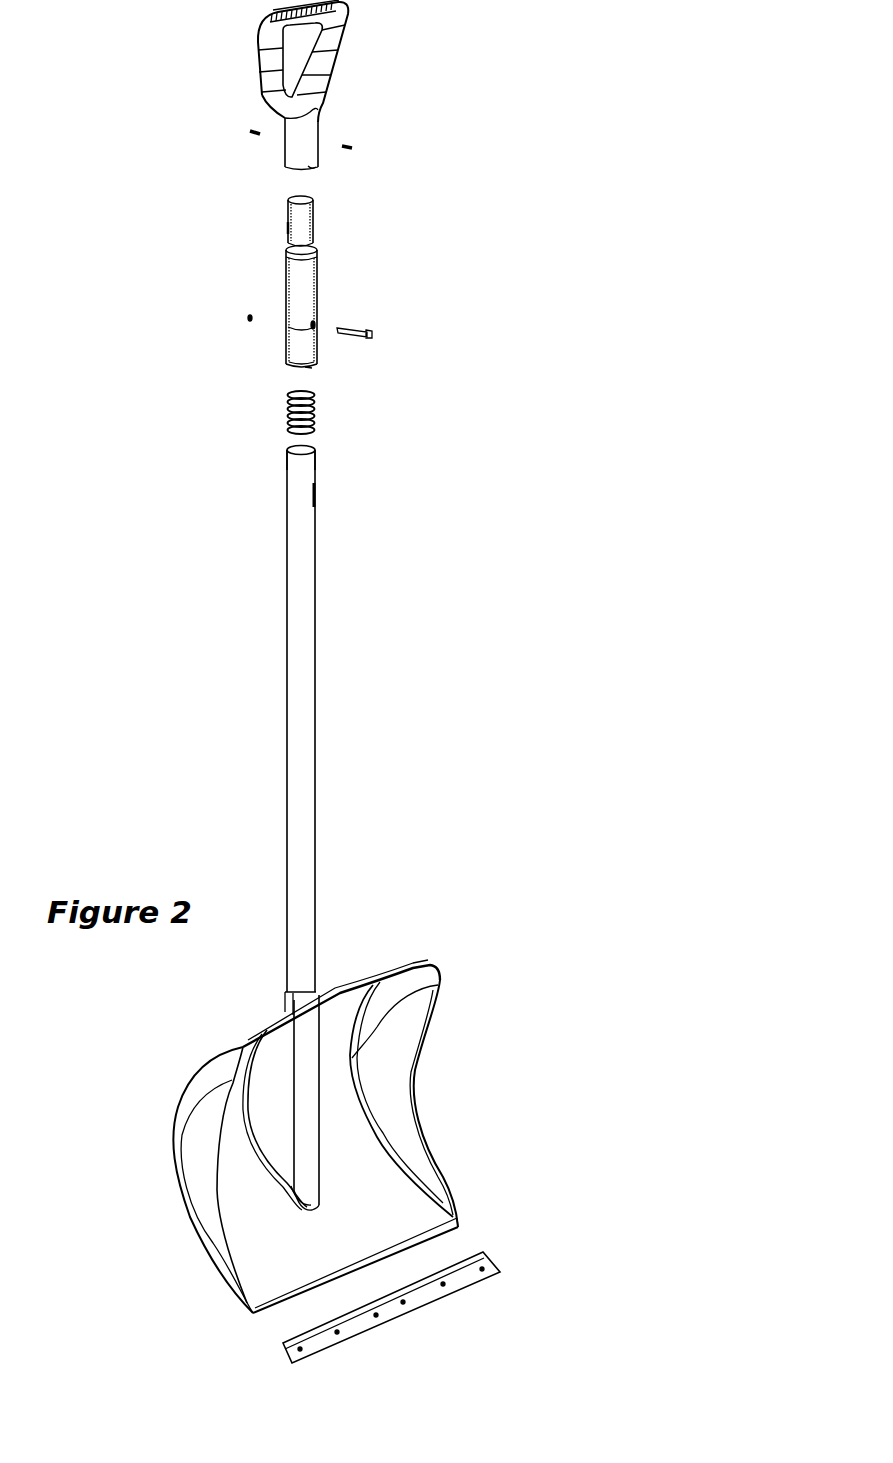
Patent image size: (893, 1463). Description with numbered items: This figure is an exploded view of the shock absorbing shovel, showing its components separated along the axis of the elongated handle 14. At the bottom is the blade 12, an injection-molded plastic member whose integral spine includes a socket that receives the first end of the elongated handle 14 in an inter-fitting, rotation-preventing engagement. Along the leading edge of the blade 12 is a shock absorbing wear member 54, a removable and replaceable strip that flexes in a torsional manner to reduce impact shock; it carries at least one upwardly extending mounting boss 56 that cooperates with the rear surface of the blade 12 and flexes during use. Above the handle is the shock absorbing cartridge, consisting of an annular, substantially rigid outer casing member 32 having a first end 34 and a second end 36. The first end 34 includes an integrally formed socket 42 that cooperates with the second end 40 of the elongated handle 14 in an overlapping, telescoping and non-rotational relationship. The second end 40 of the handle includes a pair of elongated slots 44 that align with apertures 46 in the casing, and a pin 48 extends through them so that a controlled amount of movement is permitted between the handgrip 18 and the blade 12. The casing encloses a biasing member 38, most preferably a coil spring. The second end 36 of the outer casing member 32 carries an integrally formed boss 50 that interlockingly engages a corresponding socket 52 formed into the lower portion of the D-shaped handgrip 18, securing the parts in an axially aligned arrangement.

The blade 12 is at (242, 1025).
The elongated handle 14 is at (330, 735).
The handgrip 18 is at (340, 66).
The outer casing member 32 is at (322, 278).
The first end of outer casing member 34 is at (296, 366).
The second end of outer casing member 36 is at (288, 228).
The biasing member 38 is at (316, 423).
The second end of elongated handle 40 is at (309, 464).
The socket 42 is at (311, 368).
The elongated slots 44 is at (316, 500).
The apertures 46 is at (315, 322).
The pin 48 is at (372, 330).
The boss 50 is at (313, 217).
The socket 52 is at (313, 168).
The shock absorbing wear member 54 is at (505, 1245).
The mounting boss 56 is at (447, 1286).